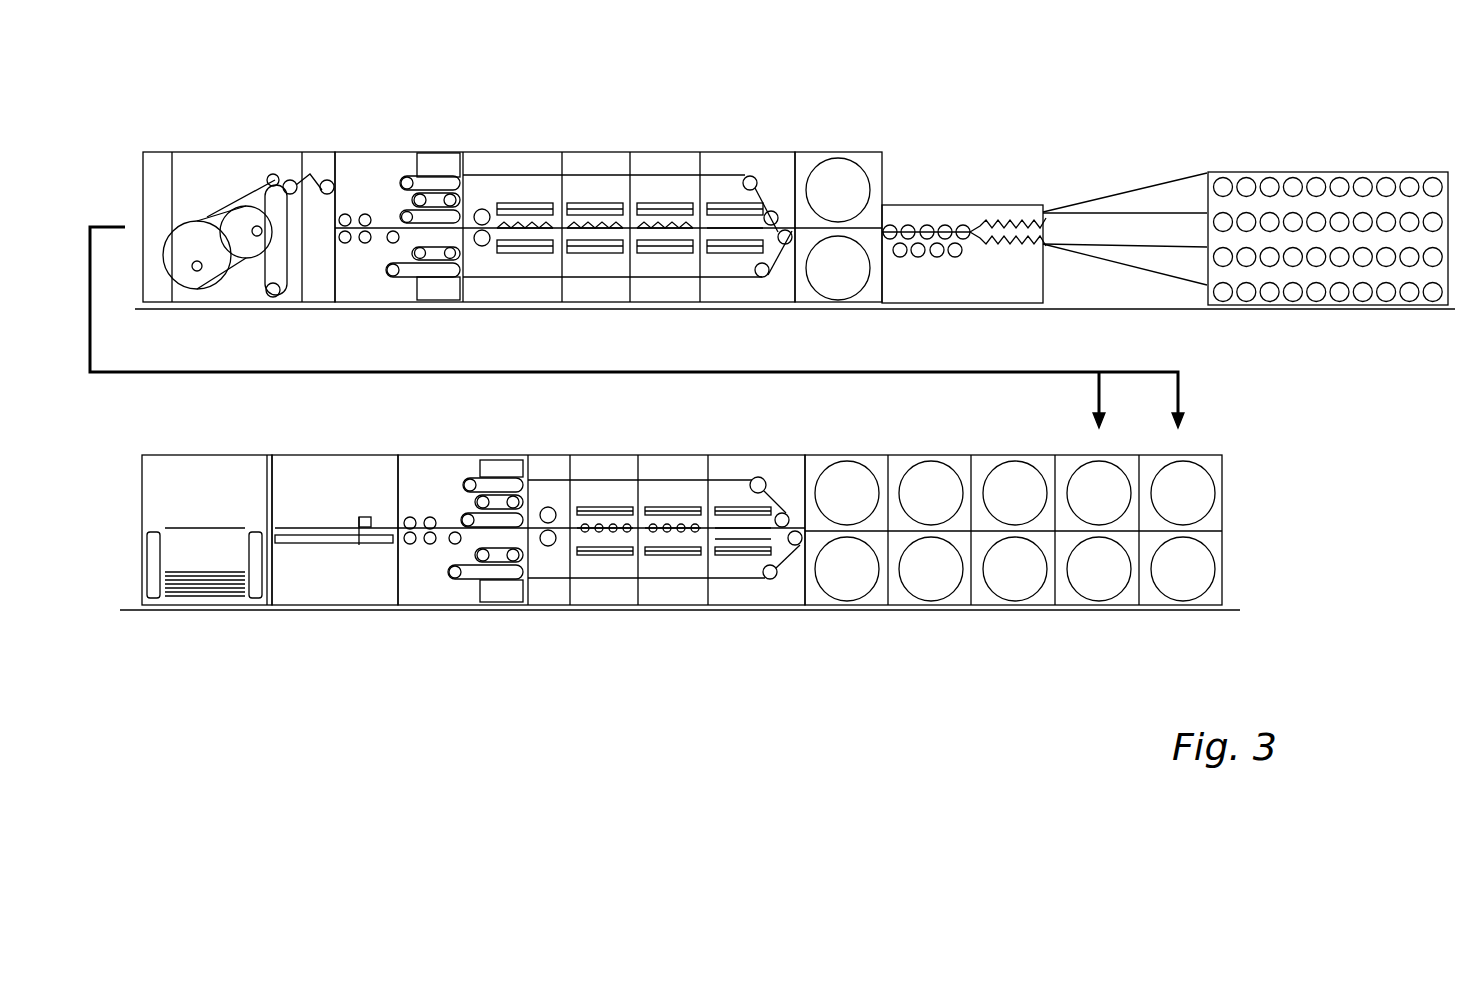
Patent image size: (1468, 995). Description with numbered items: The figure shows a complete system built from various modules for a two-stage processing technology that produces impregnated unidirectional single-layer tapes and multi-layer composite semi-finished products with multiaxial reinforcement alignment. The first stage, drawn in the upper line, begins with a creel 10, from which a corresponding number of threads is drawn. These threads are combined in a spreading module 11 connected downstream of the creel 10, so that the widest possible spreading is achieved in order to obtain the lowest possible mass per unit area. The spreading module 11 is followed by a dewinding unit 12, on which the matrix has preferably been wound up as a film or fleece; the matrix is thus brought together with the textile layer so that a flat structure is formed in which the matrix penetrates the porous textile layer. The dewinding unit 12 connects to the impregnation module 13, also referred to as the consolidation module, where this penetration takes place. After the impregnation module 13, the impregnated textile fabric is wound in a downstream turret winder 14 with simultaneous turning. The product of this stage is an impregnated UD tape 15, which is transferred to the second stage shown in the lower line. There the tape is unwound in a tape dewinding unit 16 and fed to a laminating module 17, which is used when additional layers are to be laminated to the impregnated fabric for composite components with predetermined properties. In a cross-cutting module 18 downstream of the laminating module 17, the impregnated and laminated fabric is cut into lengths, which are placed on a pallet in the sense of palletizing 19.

The creel 10 is at (1318, 178).
The spreading module 11 is at (948, 220).
The dewinding unit 12 is at (833, 170).
The impregnation module 13 is at (657, 155).
The turret winder 14 is at (247, 168).
The impregnated UD tape 15 is at (97, 222).
The tape dewinding unit 16 is at (1005, 587).
The laminating module 17 is at (660, 590).
The cross-cutting module 18 is at (345, 583).
The palletizing 19 is at (202, 587).